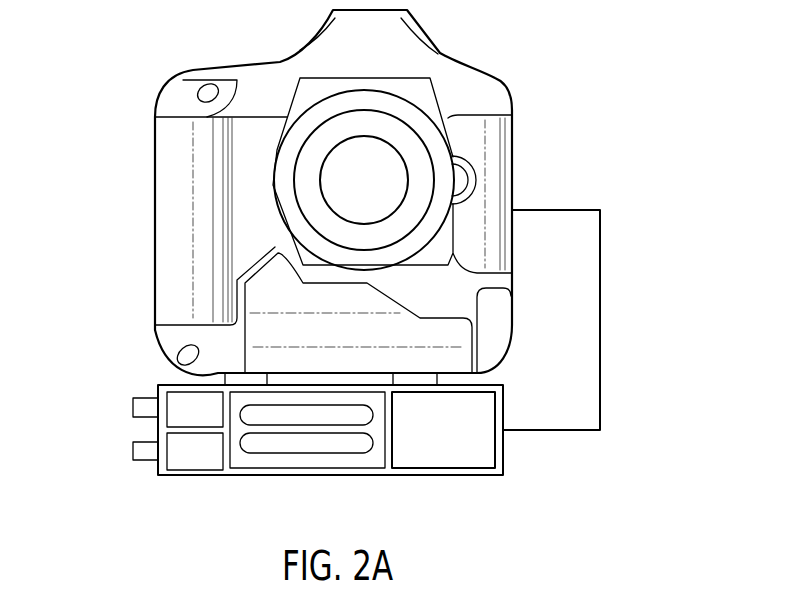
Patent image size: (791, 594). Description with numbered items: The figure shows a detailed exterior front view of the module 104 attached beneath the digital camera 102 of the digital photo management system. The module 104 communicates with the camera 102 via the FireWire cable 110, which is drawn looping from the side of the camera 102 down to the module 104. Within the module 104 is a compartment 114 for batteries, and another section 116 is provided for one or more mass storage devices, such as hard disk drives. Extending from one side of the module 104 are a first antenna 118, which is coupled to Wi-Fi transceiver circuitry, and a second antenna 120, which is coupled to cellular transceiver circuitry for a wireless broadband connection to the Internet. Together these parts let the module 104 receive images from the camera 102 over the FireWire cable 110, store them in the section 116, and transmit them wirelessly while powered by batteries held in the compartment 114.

The digital camera 102 is at (463, 65).
The module 104 is at (498, 457).
The FireWire connection 110 is at (600, 318).
The compartment 114 is at (440, 453).
The section 116 is at (307, 455).
The first antenna 118 is at (133, 408).
The second antenna 120 is at (133, 450).